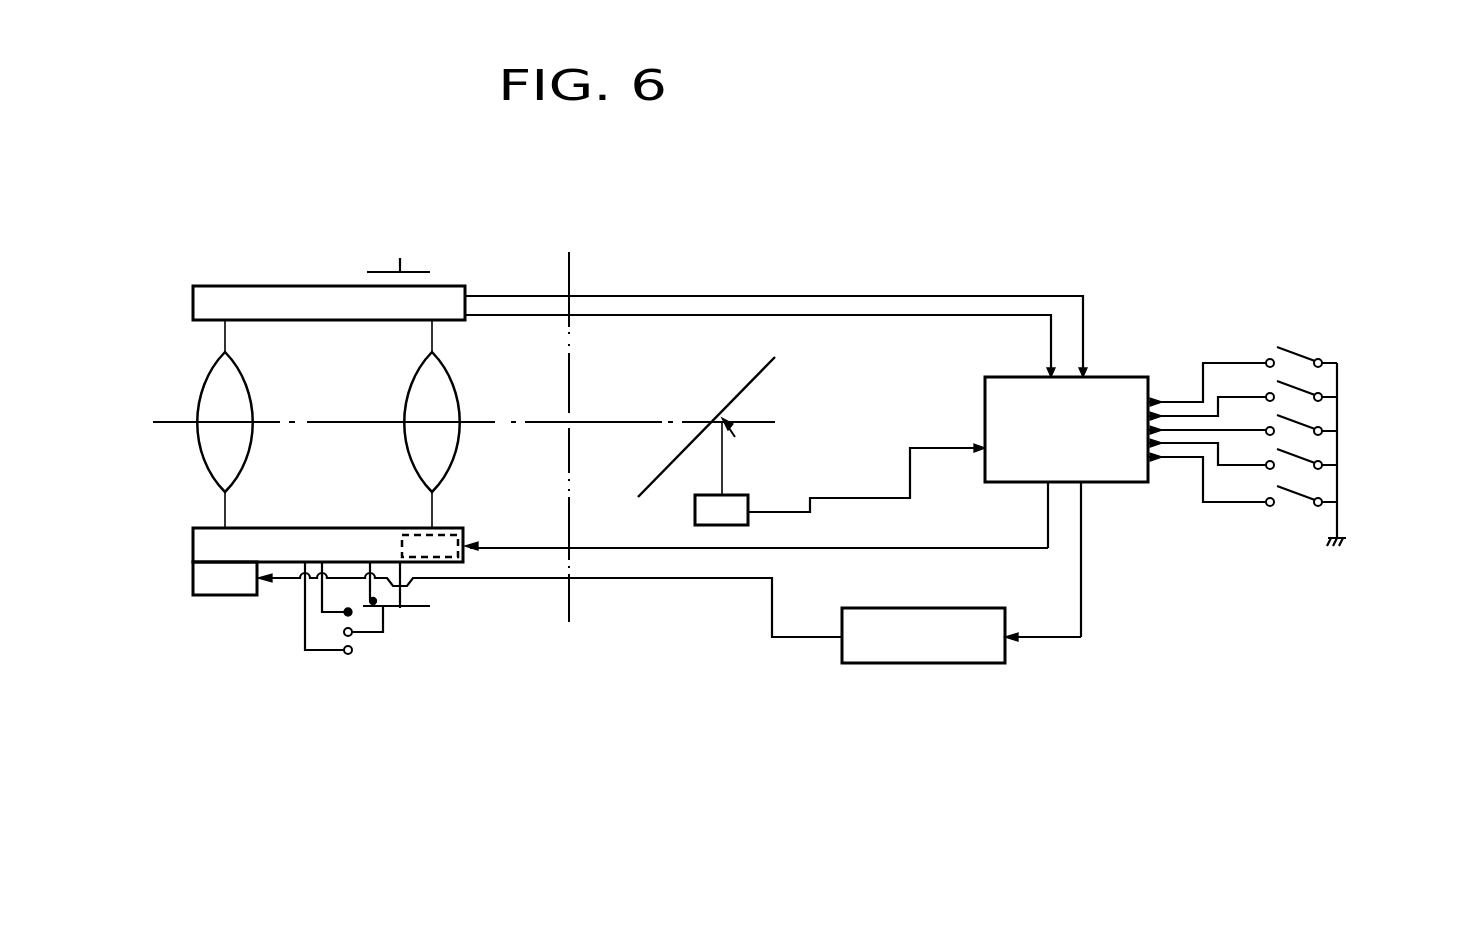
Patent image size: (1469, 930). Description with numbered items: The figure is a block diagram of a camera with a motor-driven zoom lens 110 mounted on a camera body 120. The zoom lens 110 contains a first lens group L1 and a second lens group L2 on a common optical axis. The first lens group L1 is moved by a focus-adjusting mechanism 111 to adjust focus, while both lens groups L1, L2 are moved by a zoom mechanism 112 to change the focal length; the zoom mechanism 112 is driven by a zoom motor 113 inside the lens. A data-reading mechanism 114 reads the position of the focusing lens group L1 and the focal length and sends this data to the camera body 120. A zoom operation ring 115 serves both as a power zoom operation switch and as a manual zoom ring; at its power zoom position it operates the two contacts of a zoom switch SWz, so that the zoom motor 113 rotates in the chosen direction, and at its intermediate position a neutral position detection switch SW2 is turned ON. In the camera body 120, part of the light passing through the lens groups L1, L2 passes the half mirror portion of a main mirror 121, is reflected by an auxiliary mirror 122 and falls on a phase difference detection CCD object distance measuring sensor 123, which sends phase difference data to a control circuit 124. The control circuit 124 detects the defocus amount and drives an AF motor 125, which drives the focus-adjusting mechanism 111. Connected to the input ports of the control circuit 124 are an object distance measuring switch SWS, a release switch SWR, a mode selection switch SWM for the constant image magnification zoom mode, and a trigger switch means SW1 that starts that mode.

The motor-driven zoom lens 110 is at (352, 205).
The camera body 120 is at (893, 207).
The focus-adjusting mechanism 111 is at (222, 596).
The zoom mechanism 112 is at (192, 540).
The zoom motor 113 is at (412, 530).
The data-reading mechanism 114 is at (242, 292).
The zoom operation ring 115 is at (418, 610).
The main mirror 121 is at (757, 378).
The auxiliary mirror 122 is at (728, 430).
The CCD object distance measuring sensor 123 is at (740, 495).
The control circuit 124 is at (993, 413).
The AF motor 125 is at (878, 652).
The first lens group L1 is at (200, 440).
The second lens group L2 is at (455, 440).
The trigger switch means SW1 is at (1300, 353).
The object distance measuring switch SWS is at (1308, 387).
The release switch SWR is at (1306, 426).
The mode selection switch SWM is at (1346, 460).
The neutral position detection switch SW2 is at (377, 597).
The zoom switch SWz is at (352, 643).